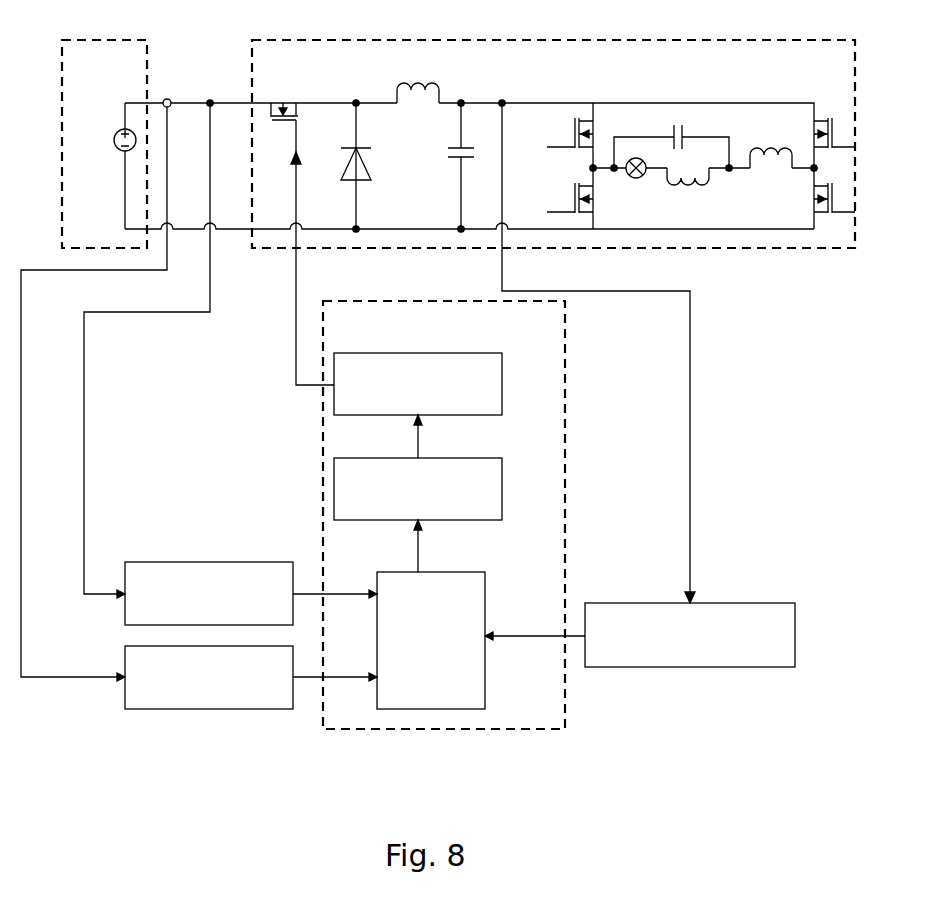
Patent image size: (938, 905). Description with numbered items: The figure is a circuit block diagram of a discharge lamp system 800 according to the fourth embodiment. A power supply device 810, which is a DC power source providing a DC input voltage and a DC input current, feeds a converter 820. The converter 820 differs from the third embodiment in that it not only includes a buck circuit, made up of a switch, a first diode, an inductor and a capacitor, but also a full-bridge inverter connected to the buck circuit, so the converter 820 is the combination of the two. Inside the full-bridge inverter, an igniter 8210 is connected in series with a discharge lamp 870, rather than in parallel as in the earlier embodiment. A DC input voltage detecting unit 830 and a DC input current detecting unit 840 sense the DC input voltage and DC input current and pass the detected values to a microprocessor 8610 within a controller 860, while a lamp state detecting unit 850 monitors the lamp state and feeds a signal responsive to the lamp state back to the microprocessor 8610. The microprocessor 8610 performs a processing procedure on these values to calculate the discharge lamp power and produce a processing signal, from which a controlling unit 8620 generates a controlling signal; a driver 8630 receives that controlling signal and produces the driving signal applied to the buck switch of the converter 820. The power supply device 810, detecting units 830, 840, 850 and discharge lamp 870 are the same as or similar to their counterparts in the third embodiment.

The discharge lamp system 800 is at (52, 32).
The power supply device 810 is at (138, 70).
The converter 820 is at (846, 72).
The DC input voltage detecting unit 830 is at (250, 561).
The DC input current detecting unit 840 is at (250, 710).
The lamp state detecting unit 850 is at (728, 602).
The controller 860 is at (556, 327).
The discharge lamp 870 is at (633, 177).
The igniter 8210 is at (679, 189).
The microprocessor 8610 is at (486, 555).
The controlling unit 8620 is at (522, 462).
The driver 8630 is at (522, 357).